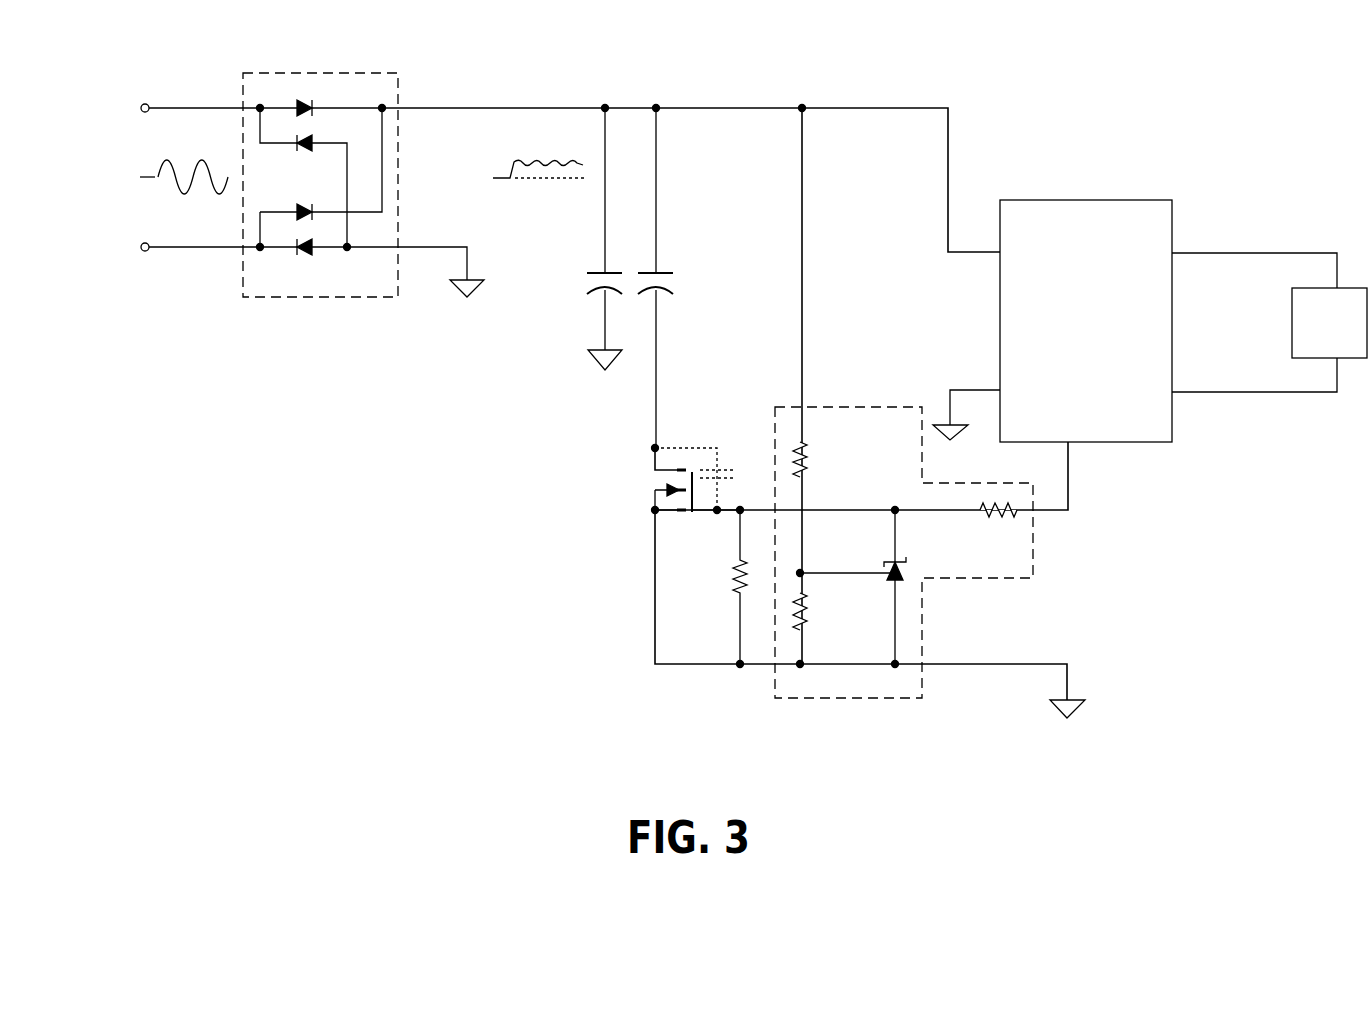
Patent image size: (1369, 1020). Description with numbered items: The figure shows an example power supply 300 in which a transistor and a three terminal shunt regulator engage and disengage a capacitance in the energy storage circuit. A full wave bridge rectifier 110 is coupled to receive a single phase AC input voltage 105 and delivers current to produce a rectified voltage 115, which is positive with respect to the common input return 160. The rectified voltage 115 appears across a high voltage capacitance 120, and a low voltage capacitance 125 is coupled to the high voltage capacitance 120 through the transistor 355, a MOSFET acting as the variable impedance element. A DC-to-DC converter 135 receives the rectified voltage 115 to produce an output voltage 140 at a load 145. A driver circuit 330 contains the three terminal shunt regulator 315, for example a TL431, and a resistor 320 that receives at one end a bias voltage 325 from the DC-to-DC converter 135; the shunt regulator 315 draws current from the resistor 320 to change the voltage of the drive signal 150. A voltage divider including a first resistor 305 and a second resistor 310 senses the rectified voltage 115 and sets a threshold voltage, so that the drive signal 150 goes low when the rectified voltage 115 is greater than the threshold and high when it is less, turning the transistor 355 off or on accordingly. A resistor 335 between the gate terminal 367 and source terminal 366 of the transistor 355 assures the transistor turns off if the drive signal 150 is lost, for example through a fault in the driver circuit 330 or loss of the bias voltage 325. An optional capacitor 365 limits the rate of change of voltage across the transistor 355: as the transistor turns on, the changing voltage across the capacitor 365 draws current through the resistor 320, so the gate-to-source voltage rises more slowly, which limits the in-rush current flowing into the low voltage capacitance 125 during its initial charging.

The single phase AC input voltage 105 is at (122, 158).
The full wave bridge rectifier 110 is at (242, 73).
The rectified voltage 115 is at (453, 170).
The high voltage capacitance 120 is at (592, 263).
The low voltage capacitance 125 is at (673, 262).
The DC-to-DC converter 135 is at (1068, 374).
The output voltage 140 is at (1213, 307).
The load 145 is at (1313, 348).
The drive signal 150 is at (763, 507).
The common input return 160 is at (585, 368).
The power supply 300 is at (310, 464).
The first resistor 305 is at (813, 458).
The resistor 310 is at (817, 613).
The three terminal shunt regulator 315 is at (887, 555).
The resistor 320 is at (1005, 528).
The bias voltage 325 is at (1077, 573).
The driver circuit 330 is at (843, 702).
The resistor 335 is at (728, 587).
The transistor 355 is at (648, 483).
The capacitor 365 is at (717, 448).
The source terminal 366 is at (652, 523).
The gate terminal 367 is at (708, 513).